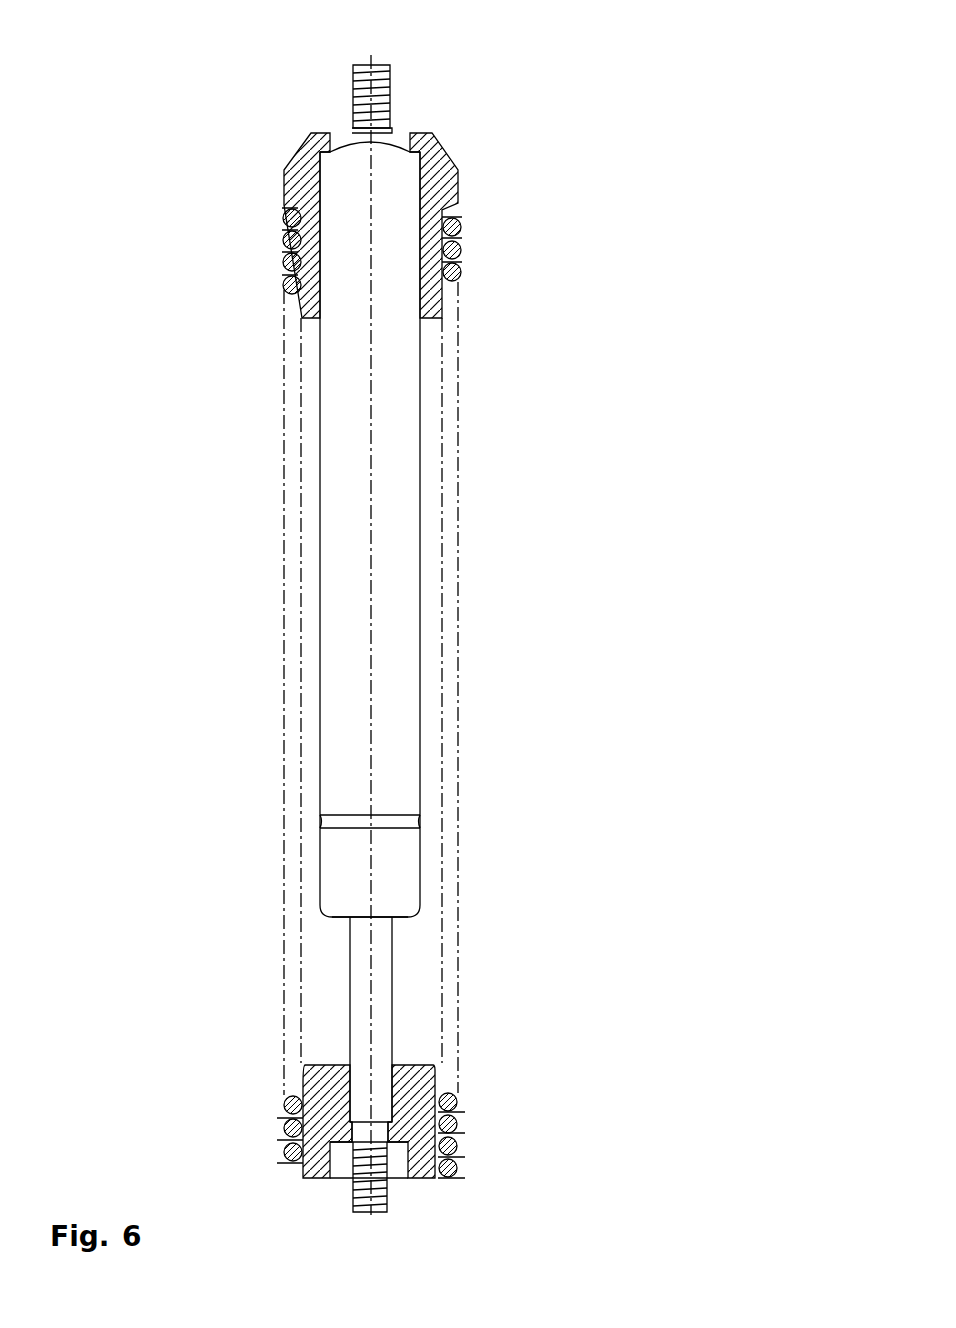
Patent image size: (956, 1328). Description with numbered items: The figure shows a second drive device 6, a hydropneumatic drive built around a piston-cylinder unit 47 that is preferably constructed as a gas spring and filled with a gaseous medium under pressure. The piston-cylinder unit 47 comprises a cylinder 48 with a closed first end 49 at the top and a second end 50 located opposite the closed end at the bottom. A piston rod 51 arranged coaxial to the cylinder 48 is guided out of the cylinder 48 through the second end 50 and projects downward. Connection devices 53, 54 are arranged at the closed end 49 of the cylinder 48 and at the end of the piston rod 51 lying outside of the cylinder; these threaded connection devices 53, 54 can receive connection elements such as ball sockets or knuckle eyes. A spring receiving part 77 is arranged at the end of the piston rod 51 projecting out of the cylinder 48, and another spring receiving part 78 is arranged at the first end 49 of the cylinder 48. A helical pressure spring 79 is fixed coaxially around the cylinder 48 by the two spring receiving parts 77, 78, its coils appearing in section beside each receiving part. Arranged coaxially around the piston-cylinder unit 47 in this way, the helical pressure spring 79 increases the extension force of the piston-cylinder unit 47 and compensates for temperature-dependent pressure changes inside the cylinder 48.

The second drive device 6 is at (225, 117).
The piston-cylinder unit 47 is at (495, 398).
The cylinder 48 is at (403, 633).
The closed first end 49 is at (397, 155).
The second end 50 is at (413, 910).
The piston rod 51 is at (385, 1012).
The connection device 53 is at (387, 82).
The connection device 54 is at (380, 1192).
The spring receiving part 77 is at (425, 1085).
The spring receiving part 78 is at (460, 181).
The helical pressure spring 79 is at (460, 278).